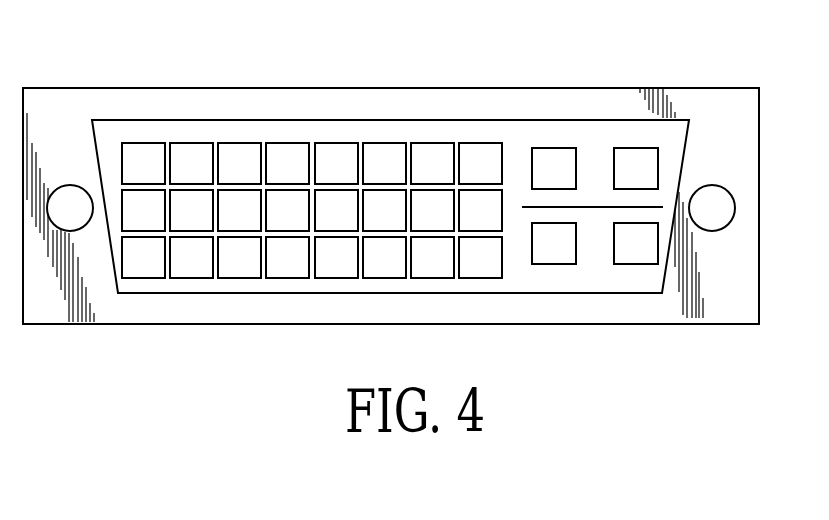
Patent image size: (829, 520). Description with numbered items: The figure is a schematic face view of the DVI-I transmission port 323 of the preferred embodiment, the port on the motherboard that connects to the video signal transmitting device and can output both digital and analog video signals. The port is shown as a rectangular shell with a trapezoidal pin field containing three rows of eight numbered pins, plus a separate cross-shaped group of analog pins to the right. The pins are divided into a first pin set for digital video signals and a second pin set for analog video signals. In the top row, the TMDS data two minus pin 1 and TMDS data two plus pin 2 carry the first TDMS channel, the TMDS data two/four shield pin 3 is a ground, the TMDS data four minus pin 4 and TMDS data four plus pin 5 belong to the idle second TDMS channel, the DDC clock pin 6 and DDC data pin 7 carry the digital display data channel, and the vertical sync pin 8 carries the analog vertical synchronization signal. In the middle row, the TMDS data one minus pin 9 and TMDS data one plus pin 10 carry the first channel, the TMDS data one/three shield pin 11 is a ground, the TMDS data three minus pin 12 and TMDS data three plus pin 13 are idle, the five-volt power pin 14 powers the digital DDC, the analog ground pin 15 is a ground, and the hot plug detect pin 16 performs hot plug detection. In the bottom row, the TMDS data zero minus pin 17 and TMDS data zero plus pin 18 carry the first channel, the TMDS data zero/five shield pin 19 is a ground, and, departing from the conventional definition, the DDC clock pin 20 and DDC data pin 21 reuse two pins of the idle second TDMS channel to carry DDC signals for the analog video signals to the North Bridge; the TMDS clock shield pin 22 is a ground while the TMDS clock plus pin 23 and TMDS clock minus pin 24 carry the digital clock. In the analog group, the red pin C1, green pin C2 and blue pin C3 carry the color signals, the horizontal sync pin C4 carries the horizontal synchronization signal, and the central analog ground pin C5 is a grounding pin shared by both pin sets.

The DVI-I transmission port 323 is at (695, 100).
The TMDS DATA 2− pin 1 is at (143, 163).
The TMDS DATA 2+ pin 2 is at (191, 163).
The TMDS DATA 2/4 SHIELD pin 3 is at (239, 163).
The TMDS DATA 4− pin 4 is at (287, 163).
The TMDS DATA 4+ pin 5 is at (336, 163).
The DDC CLK pin 6 is at (384, 163).
The DDC DATA pin 7 is at (432, 163).
The V SYNC pin 8 is at (480, 163).
The TMDS DATA 1− pin 9 is at (143, 210).
The TMDS DATA 1+ pin 10 is at (191, 210).
The TMDS DATA 1/3 SHIELD pin 11 is at (239, 210).
The TMDS DATA 3− pin 12 is at (287, 210).
The TMDS DATA 3+ pin 13 is at (336, 210).
The +5 V power pin 14 is at (384, 210).
The analog ground pin 15 is at (432, 210).
The hot plug detect pin 16 is at (480, 210).
The TMDS DATA 0− pin 17 is at (143, 257).
The TMDS DATA 0+ pin 18 is at (191, 257).
The TMDS DATA 0/5 SHIELD pin 19 is at (239, 257).
The DDC clock pin 20 is at (287, 257).
The DDC data pin 21 is at (336, 257).
The TMDS CLK SHIELD pin 22 is at (384, 257).
The TMDS CLK+ pin 23 is at (432, 257).
The TMDS CLK− pin 24 is at (480, 257).
The RED pin C1 is at (554, 168).
The GREEN pin C2 is at (636, 168).
The BLUE pin C3 is at (554, 243).
The H SYNC pin C4 is at (636, 243).
The analog ground pin C5 is at (592, 207).